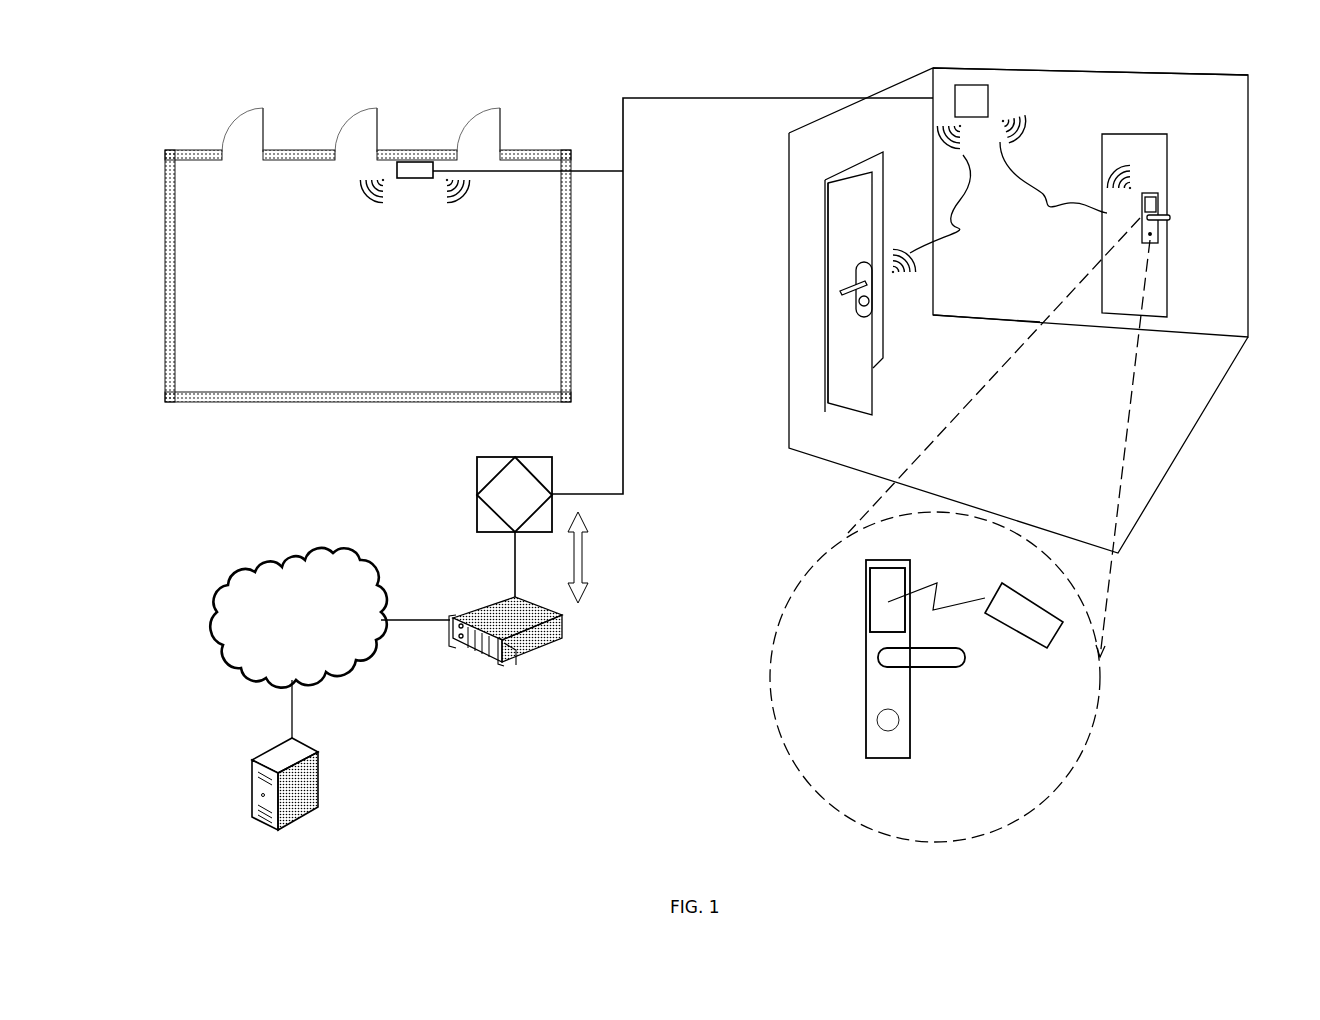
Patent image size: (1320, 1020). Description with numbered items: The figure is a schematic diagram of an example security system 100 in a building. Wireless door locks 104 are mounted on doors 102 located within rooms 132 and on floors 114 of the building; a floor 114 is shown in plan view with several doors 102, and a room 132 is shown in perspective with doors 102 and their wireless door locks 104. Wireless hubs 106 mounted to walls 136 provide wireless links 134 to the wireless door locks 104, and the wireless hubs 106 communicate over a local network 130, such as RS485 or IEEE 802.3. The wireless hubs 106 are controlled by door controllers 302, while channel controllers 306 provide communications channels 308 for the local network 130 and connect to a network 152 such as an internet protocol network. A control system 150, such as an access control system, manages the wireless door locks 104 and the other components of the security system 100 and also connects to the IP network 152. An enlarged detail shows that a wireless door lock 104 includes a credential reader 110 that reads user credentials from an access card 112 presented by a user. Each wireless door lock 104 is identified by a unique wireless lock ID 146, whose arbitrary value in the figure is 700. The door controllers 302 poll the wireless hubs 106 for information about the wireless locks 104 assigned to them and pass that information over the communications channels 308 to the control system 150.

The security system 100 is at (237, 60).
The door 102 is at (263, 125).
The wireless door lock 104 is at (860, 273).
The wireless hub 106 is at (407, 178).
The credential reader 110 is at (880, 583).
The access card 112 is at (1047, 648).
The floor 114 is at (265, 402).
The local network 130 is at (718, 98).
The room 132 is at (1277, 245).
The wireless link 134 is at (1008, 200).
The wall 136 is at (1113, 82).
The wireless lock ID 146 is at (915, 775).
The control system 150 is at (303, 783).
The network 152 is at (330, 644).
The door controller 302 is at (477, 475).
The channel controller 306 is at (537, 637).
The communications channel 308 is at (585, 537).
The wireless lock ID value 700 is at (925, 673).